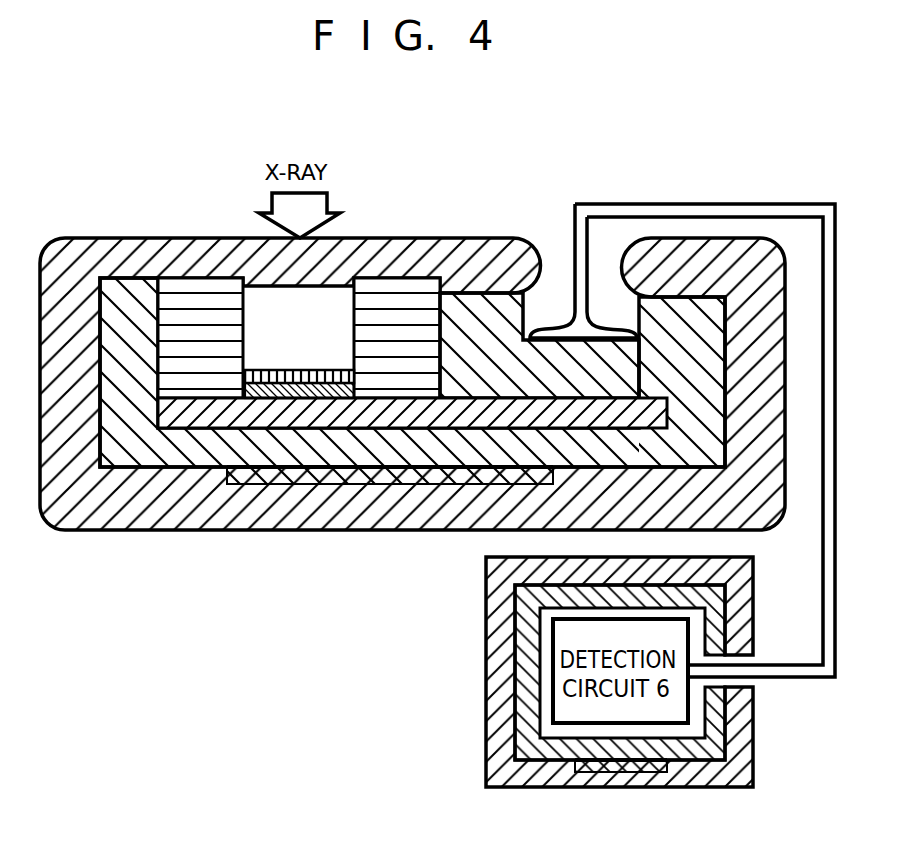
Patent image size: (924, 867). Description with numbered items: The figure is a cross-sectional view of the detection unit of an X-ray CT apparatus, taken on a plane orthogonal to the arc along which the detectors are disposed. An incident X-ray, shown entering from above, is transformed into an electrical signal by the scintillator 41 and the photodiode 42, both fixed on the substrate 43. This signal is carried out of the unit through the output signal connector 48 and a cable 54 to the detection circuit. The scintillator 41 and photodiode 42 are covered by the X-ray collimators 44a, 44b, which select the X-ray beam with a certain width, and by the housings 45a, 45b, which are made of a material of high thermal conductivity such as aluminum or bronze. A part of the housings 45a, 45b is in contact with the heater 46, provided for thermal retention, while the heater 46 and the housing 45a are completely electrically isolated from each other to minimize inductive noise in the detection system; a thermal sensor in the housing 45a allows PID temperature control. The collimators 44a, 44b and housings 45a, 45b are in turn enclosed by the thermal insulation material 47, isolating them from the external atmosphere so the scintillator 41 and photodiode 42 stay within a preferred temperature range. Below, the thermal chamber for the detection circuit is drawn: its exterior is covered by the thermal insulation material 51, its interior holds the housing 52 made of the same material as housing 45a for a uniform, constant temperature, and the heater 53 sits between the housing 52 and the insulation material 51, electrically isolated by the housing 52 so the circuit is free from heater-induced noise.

The scintillator 41 is at (348, 378).
The photodiode 42 is at (295, 388).
The substrate 43 is at (412, 418).
The X-ray collimator 44a is at (415, 292).
The X-ray collimator 44b is at (202, 292).
The housing 45a is at (213, 465).
The housing 45b is at (512, 312).
The heater 46 is at (252, 478).
The thermal insulation material 47 is at (113, 518).
The output signal connector 48 is at (538, 332).
The thermal insulation material 51 is at (520, 768).
The housing 52 is at (685, 753).
The heater 53 is at (635, 770).
The cable 54 is at (838, 562).